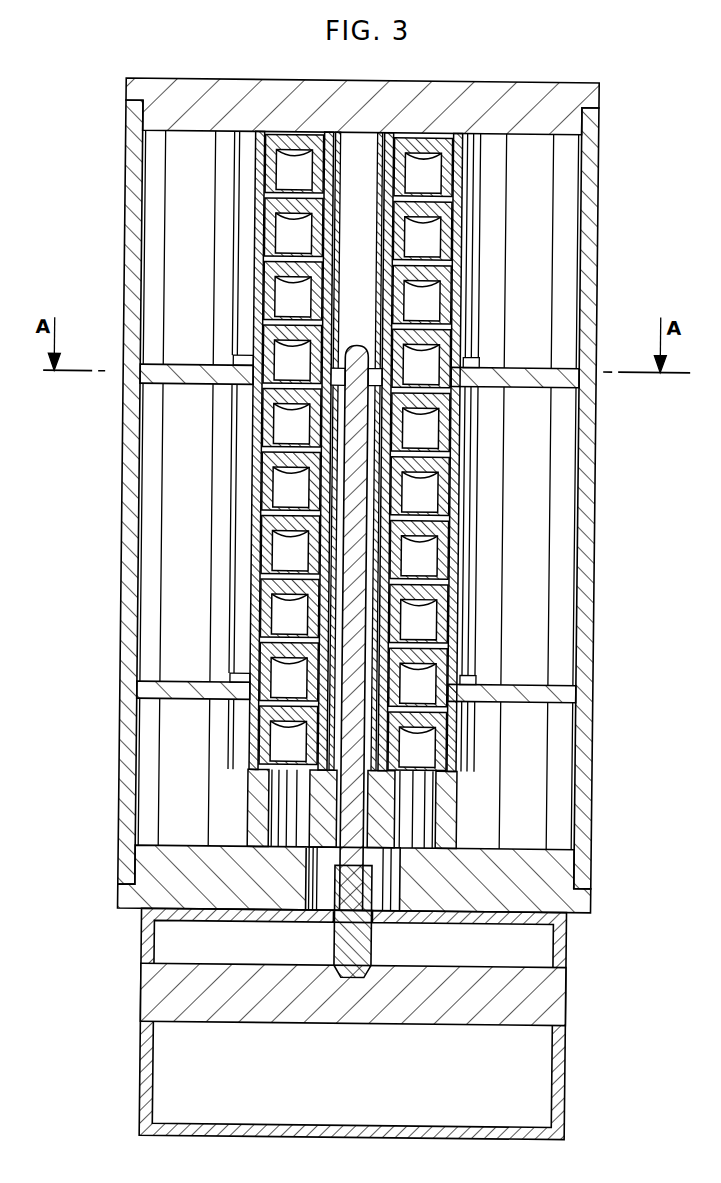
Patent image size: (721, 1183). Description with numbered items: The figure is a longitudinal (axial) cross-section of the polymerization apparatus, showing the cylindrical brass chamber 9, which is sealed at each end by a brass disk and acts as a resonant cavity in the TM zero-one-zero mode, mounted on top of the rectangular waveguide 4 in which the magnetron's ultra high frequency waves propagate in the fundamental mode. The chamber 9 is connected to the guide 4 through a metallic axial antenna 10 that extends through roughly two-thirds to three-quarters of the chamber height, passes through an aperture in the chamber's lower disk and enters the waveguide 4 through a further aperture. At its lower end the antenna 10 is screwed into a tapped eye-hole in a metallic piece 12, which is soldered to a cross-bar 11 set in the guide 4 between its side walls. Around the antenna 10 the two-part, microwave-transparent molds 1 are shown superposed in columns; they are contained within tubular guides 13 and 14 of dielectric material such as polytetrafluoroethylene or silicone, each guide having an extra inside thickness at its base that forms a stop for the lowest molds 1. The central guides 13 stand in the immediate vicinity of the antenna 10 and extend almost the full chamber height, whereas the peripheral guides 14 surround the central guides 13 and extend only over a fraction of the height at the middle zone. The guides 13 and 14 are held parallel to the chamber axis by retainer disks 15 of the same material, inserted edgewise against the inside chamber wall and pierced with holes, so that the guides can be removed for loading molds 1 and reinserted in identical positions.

The mold 1 is at (462, 269).
The waveguide 4 is at (578, 1055).
The chamber 9 is at (588, 615).
The axial antenna 10 is at (358, 352).
The cross-bar 11 is at (478, 1010).
The metallic piece 12 is at (369, 942).
The central tubular guide 13 is at (462, 567).
The peripheral tubular guide 14 is at (479, 478).
The retainer disk 15 is at (207, 378).